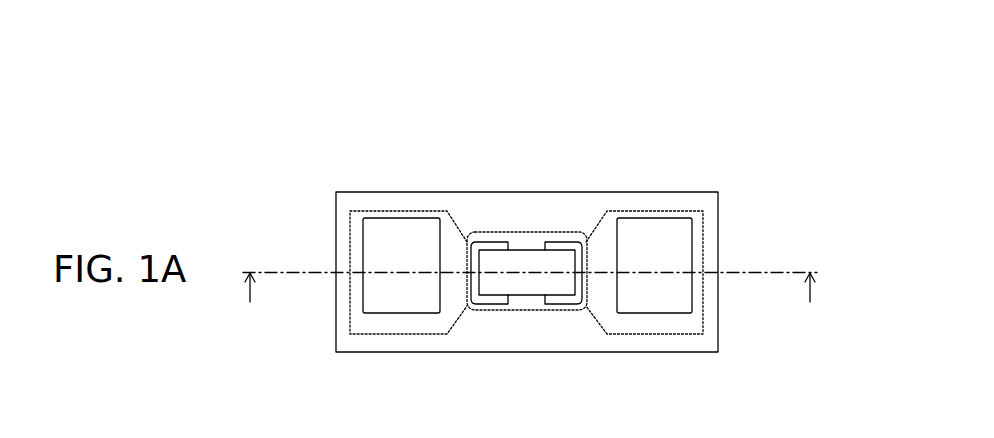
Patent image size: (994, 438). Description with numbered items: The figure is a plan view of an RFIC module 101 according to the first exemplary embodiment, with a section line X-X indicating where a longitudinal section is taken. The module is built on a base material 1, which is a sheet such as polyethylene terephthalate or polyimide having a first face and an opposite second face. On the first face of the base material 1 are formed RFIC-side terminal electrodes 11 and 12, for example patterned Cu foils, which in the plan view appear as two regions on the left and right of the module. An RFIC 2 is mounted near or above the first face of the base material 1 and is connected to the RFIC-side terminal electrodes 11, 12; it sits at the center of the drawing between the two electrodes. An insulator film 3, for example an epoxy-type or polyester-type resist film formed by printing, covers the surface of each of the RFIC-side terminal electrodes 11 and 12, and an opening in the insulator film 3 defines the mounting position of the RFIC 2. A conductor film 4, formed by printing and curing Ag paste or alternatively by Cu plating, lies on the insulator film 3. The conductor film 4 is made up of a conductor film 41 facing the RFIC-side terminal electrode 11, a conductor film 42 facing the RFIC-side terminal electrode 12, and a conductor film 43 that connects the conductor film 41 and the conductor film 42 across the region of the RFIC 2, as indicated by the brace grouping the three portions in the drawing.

The RFIC module 101 is at (756, 48).
The base material 1 is at (719, 193).
The insulator film 3 is at (718, 212).
The RFIC 2 is at (525, 284).
The conductor film 4 is at (625, 118).
The conductor film 41 is at (415, 238).
The conductor film 42 is at (639, 236).
The conductor film 43 is at (502, 222).
The RFIC-side terminal electrode 11 is at (389, 209).
The RFIC-side terminal electrode 12 is at (669, 209).